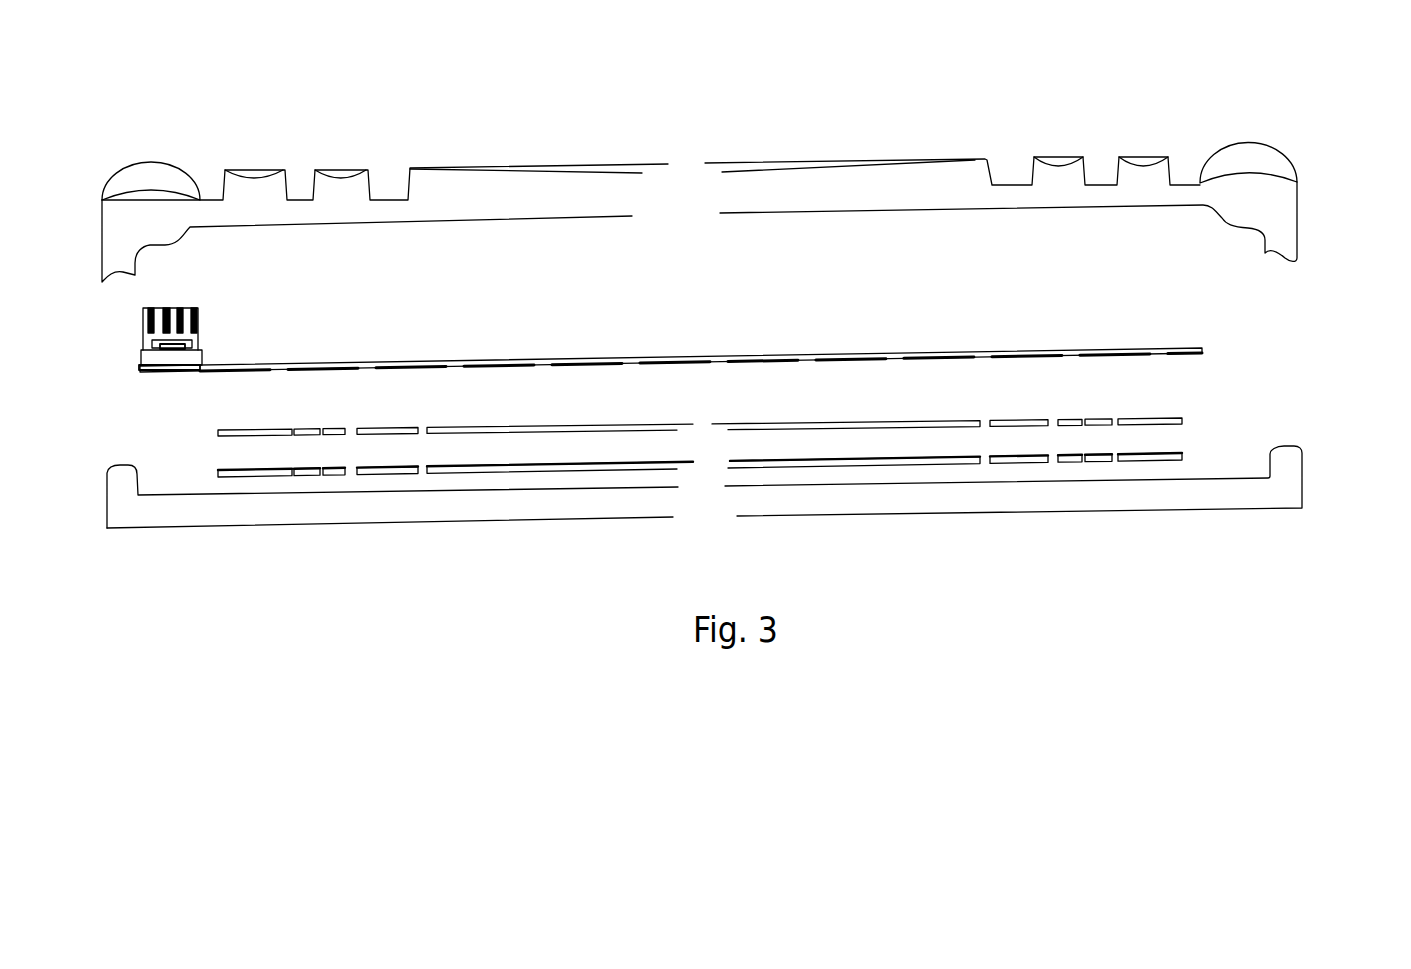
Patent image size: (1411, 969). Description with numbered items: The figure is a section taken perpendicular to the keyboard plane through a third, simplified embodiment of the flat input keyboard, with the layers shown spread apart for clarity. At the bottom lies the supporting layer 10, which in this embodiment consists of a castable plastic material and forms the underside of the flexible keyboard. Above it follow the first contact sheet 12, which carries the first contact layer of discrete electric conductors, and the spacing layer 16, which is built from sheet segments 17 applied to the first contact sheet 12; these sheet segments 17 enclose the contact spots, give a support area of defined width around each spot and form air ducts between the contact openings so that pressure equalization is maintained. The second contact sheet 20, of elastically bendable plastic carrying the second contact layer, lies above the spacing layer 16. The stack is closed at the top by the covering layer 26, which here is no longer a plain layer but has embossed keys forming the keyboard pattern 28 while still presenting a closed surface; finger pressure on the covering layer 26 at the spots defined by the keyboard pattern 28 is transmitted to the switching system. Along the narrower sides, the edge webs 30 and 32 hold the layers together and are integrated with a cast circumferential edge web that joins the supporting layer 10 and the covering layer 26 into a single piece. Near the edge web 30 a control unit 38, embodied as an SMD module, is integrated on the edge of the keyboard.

The supporting layer 10 is at (1240, 500).
The first contact sheet 12 is at (1197, 454).
The spacing layer 16 is at (751, 430).
The sheet segments 17 is at (375, 423).
The second contact sheet 20 is at (1212, 349).
The covering layer 26 is at (755, 169).
The keyboard pattern 28 is at (978, 155).
The edge web 30 is at (150, 172).
The edge web 32 is at (1265, 161).
The control unit 38 is at (200, 345).